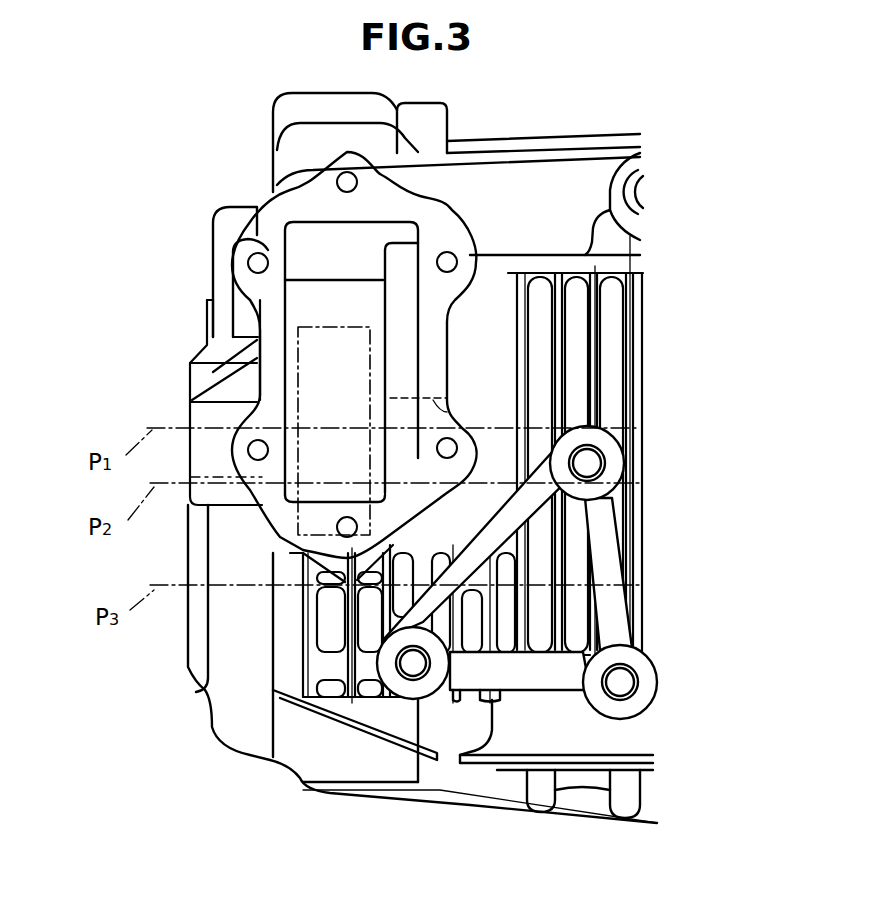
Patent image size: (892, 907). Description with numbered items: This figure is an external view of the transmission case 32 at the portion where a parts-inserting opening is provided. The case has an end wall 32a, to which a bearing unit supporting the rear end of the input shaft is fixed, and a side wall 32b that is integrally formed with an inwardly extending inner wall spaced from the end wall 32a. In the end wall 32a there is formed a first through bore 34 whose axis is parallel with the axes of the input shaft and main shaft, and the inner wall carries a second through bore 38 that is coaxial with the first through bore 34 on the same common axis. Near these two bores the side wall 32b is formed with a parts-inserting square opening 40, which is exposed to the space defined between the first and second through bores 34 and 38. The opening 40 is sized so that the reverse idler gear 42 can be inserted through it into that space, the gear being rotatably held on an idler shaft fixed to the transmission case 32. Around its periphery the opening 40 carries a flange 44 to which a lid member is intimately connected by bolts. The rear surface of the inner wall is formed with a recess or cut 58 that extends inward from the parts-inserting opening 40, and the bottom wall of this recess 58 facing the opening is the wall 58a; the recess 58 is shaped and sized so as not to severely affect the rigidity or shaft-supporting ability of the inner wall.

The transmission case 32 is at (570, 142).
The end wall 32a is at (193, 632).
The side wall 32b is at (487, 188).
The first through bore 34 is at (215, 382).
The second through bore 38 is at (455, 405).
The parts-inserting square opening 40 is at (297, 287).
The reverse idler gear 42 is at (347, 373).
The flange 44 is at (263, 288).
The recess 58 is at (598, 492).
The bottom wall of the recess 58a is at (400, 435).